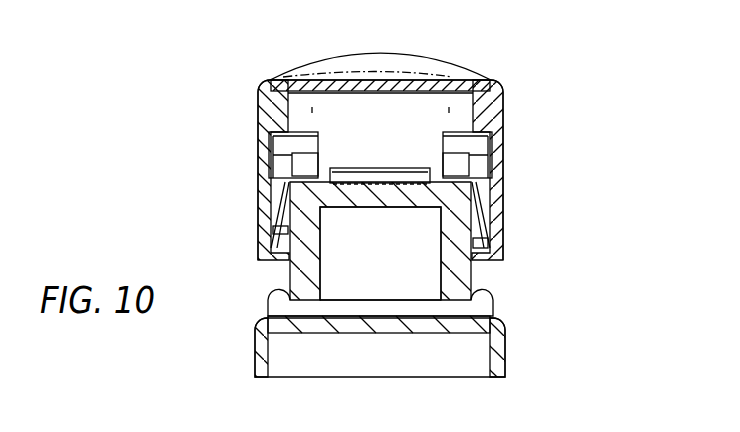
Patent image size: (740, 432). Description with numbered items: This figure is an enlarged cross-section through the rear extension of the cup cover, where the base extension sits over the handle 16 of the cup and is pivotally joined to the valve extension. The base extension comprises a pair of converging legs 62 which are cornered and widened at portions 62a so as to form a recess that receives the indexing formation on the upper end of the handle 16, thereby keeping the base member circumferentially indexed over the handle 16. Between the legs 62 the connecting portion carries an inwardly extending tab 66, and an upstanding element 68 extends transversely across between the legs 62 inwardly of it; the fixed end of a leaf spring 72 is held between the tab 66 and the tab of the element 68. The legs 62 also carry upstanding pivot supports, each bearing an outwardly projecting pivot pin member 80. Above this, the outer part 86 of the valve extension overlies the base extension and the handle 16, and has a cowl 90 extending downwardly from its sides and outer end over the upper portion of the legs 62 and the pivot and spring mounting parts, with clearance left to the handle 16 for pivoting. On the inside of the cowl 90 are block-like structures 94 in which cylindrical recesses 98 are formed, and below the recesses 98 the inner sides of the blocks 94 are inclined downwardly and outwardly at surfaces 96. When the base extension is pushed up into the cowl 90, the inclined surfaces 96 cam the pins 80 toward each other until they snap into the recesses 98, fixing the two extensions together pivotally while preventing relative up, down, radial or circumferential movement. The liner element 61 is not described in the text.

The handle 16 is at (492, 364).
The liner 61 is at (482, 318).
The converging legs 62 is at (293, 194).
The cornered and widened leg portions 62a is at (268, 298).
The tab 66 is at (383, 167).
The upstanding element 68 is at (383, 209).
The leaf spring 72 is at (412, 182).
The pivot pin member 80 is at (264, 134).
The outer part of the valve extension 86 is at (357, 78).
The cowl 90 is at (498, 213).
The block-like structures 94 is at (478, 242).
The inclined surfaces 96 is at (278, 240).
The cylindrical recesses 98 is at (501, 104).